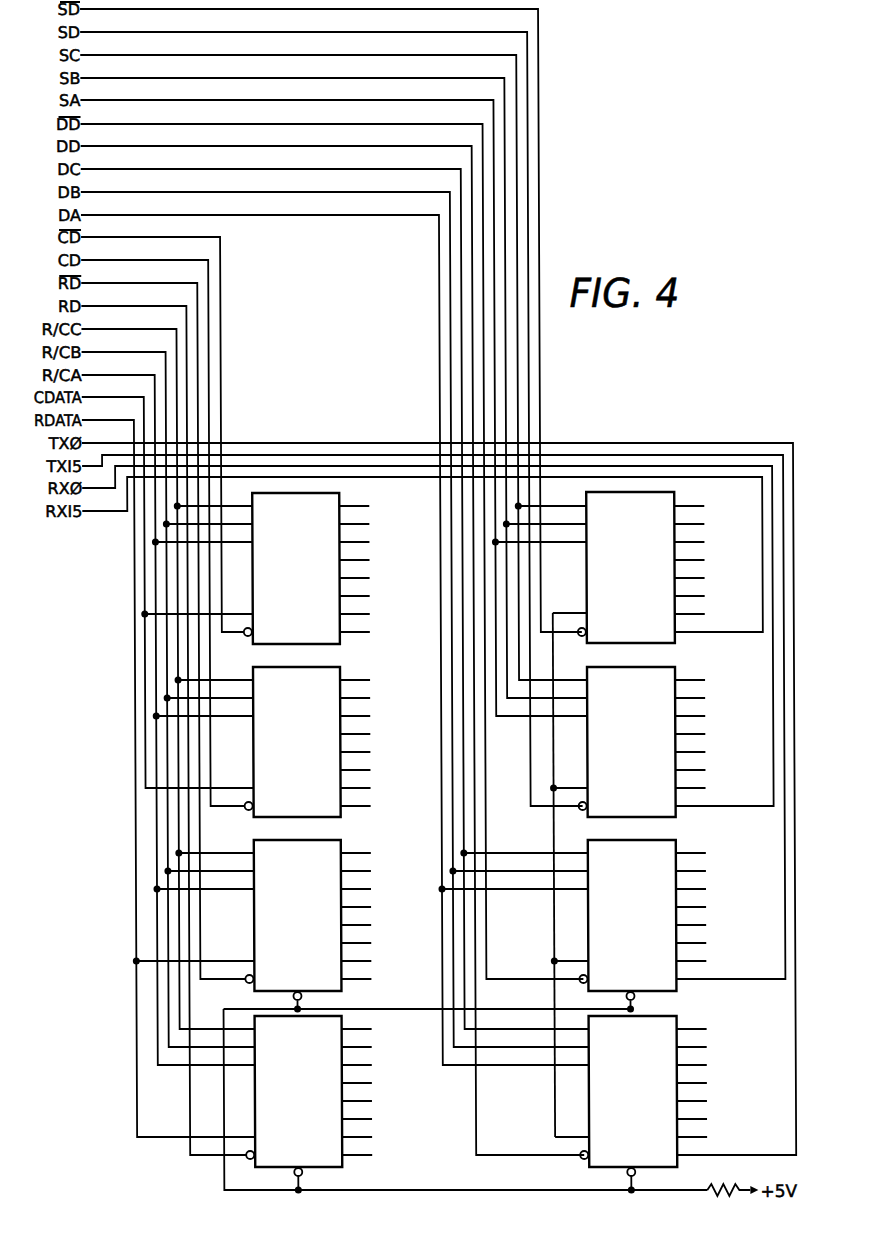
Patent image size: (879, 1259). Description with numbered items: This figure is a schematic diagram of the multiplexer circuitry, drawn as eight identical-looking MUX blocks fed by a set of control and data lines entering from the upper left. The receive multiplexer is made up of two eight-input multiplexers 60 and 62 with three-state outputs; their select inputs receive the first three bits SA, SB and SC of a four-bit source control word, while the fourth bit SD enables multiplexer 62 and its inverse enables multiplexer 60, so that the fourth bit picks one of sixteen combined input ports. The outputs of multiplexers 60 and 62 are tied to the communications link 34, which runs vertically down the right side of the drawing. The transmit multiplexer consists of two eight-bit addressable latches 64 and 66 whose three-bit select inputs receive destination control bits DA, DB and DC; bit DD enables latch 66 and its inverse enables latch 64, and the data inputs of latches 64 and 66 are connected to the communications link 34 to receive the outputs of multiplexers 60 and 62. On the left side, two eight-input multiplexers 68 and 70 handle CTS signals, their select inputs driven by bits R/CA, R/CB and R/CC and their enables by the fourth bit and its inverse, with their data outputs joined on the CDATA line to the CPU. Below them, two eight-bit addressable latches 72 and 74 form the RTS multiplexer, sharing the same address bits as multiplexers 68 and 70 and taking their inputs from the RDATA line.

The communications link 34 is at (549, 831).
The 8-input multiplexer 60 is at (616, 573).
The 8-input multiplexer 62 is at (616, 747).
The 8-bit addressable latch 64 is at (616, 920).
The 8-bit addressable latch 66 is at (616, 1096).
The 8-input multiplexer 68 is at (281, 573).
The 8-input multiplexer 70 is at (281, 747).
The 8-bit addressable latch 72 is at (281, 920).
The 8-bit addressable latch 74 is at (281, 1096).